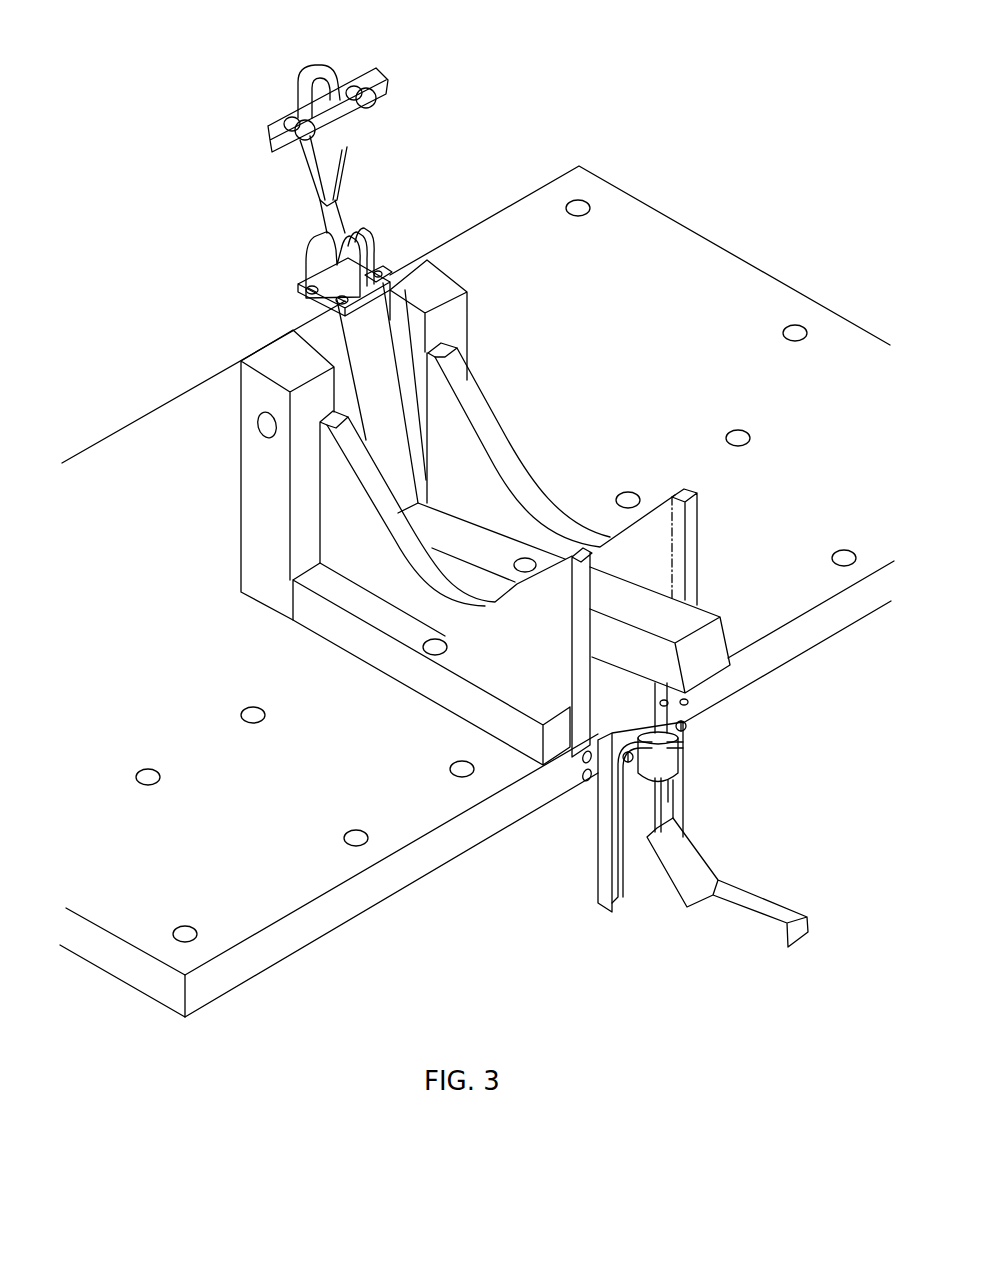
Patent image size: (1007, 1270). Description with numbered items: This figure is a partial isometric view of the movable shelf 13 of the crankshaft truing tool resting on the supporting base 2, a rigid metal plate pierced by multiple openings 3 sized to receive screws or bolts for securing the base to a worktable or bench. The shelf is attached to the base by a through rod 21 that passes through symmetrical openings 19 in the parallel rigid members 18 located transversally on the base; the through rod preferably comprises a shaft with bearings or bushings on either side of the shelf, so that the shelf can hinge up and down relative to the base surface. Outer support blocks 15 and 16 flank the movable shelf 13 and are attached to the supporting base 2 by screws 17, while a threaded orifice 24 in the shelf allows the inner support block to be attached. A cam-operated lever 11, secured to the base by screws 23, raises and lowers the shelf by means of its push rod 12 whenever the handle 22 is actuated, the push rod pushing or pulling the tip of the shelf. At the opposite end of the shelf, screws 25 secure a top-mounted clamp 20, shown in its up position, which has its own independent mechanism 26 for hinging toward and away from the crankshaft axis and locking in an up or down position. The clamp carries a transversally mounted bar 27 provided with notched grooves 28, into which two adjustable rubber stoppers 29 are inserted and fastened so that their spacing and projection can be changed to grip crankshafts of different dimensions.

The supporting base 2 is at (670, 258).
The openings 3 is at (565, 213).
The cam-operated lever 11 is at (632, 882).
The push rod 12 is at (656, 698).
The movable shelf 13 is at (709, 655).
The outer support block 15 is at (367, 560).
The outer support block 16 is at (682, 538).
The screws 17 is at (430, 650).
The parallel rigid members 18 is at (468, 304).
The openings 19 is at (262, 428).
The top-mounted clamp 20 is at (318, 66).
The through rod 21 is at (400, 357).
The handle 22 is at (743, 919).
The screws 23 is at (687, 728).
The threaded orifice 24 is at (517, 560).
The screws 25 is at (340, 298).
The independent mechanism 26 is at (330, 252).
The transversally mounted bar 27 is at (380, 66).
The notched grooves 28 is at (355, 106).
The adjustable rubber stoppers 29 is at (380, 101).